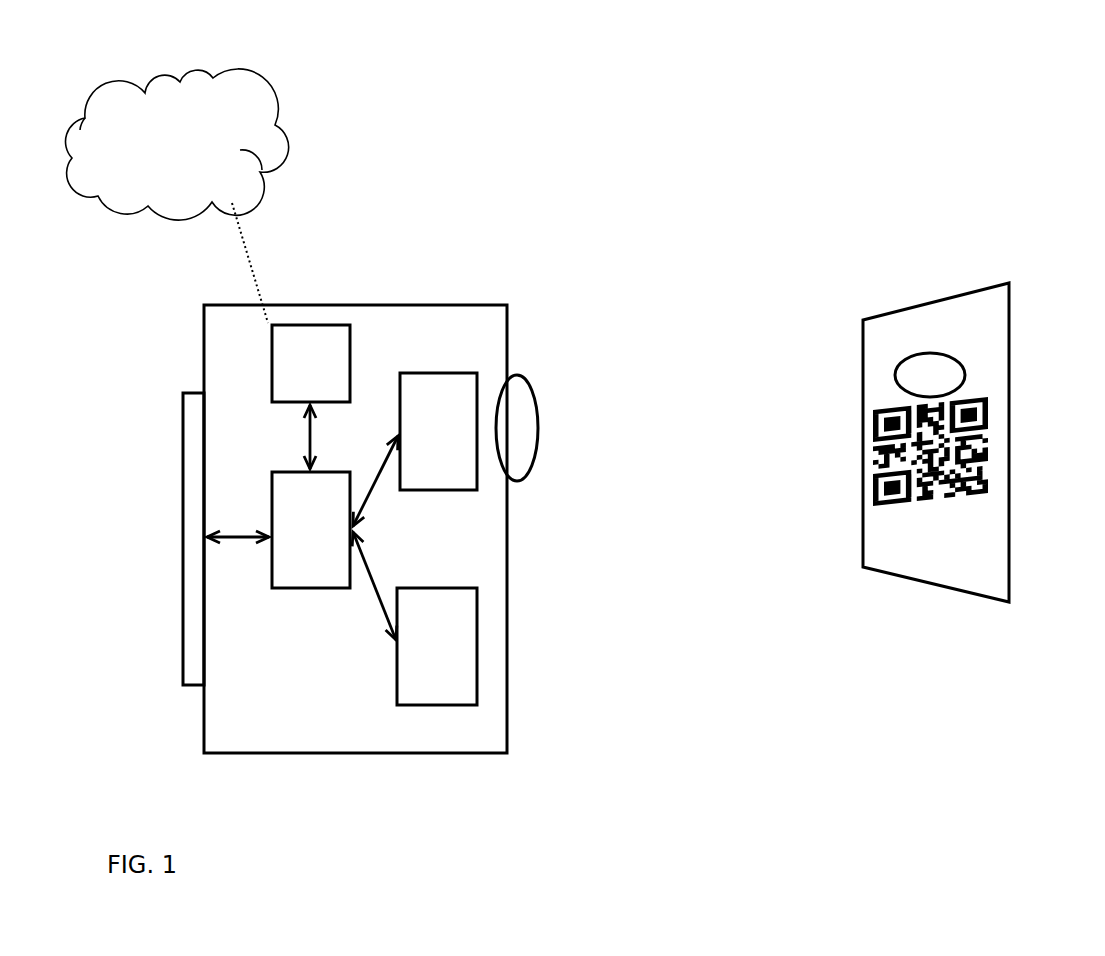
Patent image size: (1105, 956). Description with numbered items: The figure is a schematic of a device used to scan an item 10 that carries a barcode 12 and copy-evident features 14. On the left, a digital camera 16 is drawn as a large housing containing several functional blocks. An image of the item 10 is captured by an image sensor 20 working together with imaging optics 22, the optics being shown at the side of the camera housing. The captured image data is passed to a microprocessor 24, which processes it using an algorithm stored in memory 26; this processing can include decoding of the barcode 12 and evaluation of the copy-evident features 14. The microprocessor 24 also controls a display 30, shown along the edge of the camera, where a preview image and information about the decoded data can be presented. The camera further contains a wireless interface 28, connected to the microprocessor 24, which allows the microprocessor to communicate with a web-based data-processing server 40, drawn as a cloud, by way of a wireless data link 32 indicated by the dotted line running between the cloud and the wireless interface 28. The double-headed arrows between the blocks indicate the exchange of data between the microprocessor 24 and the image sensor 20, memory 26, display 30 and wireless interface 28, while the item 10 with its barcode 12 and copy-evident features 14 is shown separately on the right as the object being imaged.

The item 10 is at (922, 318).
The barcode 12 is at (907, 490).
The copy-evident features 14 is at (963, 360).
The digital camera 16 is at (507, 305).
The image sensor 20 is at (457, 373).
The imaging optics 22 is at (523, 400).
The microprocessor 24 is at (310, 588).
The memory 26 is at (437, 705).
The wireless interface 28 is at (310, 323).
The display 30 is at (183, 615).
The wireless data link 32 is at (242, 257).
The web-based data-processing server 40 is at (262, 110).